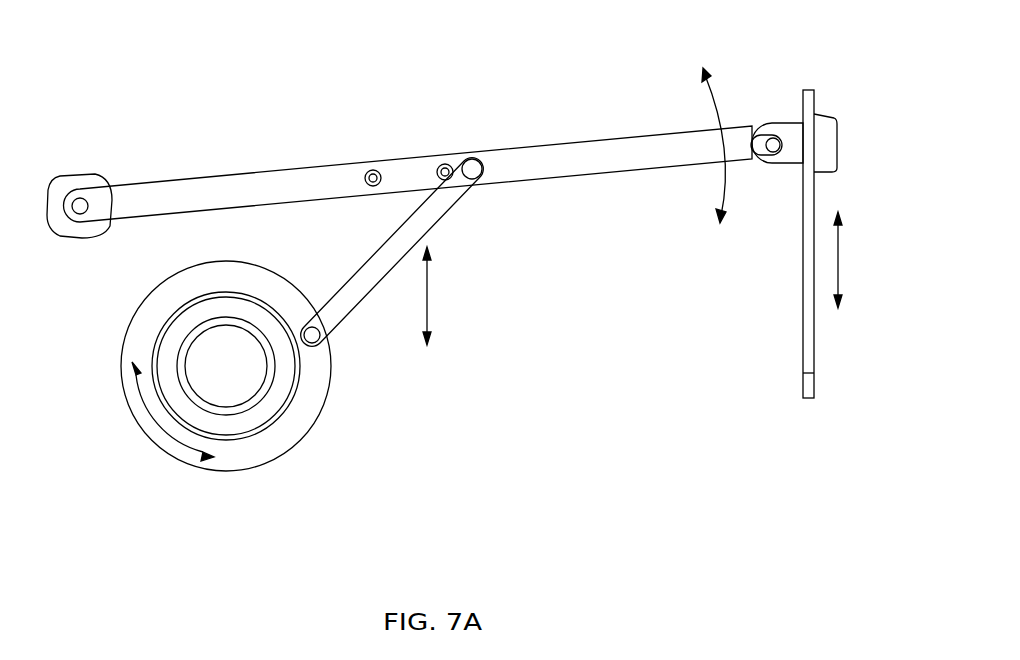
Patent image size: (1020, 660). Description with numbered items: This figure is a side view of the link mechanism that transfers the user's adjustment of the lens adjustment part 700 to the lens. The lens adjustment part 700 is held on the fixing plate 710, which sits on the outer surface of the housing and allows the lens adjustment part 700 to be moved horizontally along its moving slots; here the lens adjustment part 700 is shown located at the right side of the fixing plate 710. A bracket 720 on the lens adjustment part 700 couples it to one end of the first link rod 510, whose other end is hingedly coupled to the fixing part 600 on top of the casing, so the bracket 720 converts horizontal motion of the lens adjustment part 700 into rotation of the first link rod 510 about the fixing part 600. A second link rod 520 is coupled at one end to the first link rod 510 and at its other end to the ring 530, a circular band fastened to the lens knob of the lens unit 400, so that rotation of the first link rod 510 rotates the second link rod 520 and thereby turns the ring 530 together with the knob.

The roller 400 is at (210, 372).
The first link rod 510 is at (585, 153).
The second link rod 520 is at (367, 280).
The ring 530 is at (290, 427).
The fixing part 600 is at (78, 183).
The lens adjustment part 700 is at (823, 121).
The fixing plate 710 is at (800, 385).
The bracket 720 is at (797, 128).